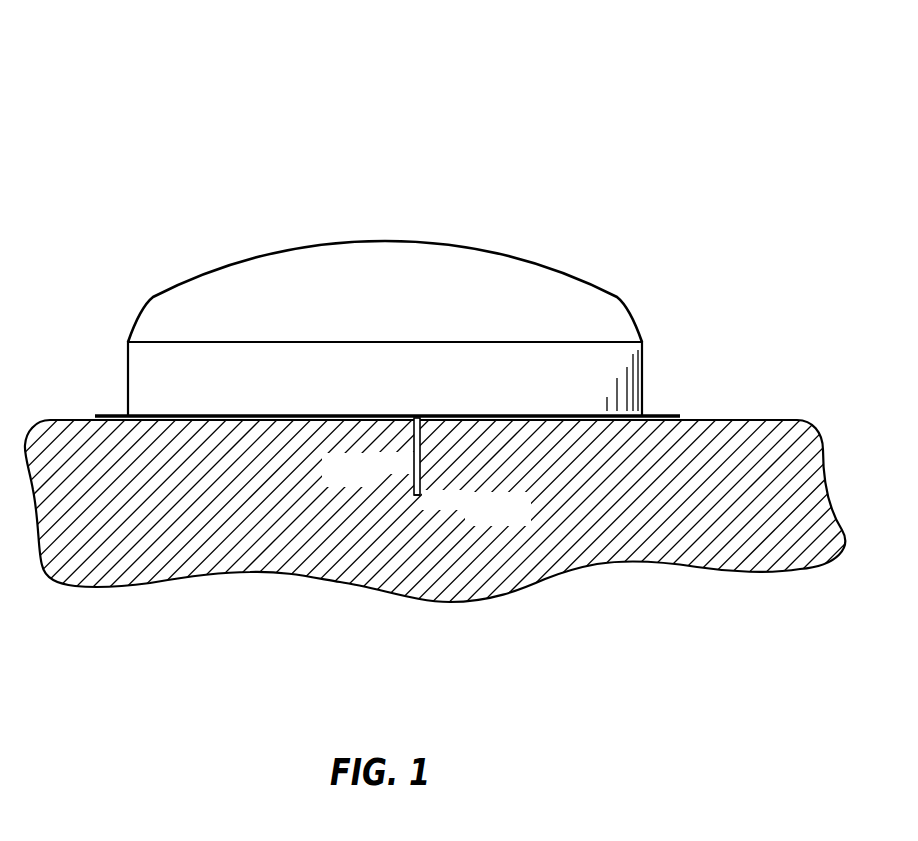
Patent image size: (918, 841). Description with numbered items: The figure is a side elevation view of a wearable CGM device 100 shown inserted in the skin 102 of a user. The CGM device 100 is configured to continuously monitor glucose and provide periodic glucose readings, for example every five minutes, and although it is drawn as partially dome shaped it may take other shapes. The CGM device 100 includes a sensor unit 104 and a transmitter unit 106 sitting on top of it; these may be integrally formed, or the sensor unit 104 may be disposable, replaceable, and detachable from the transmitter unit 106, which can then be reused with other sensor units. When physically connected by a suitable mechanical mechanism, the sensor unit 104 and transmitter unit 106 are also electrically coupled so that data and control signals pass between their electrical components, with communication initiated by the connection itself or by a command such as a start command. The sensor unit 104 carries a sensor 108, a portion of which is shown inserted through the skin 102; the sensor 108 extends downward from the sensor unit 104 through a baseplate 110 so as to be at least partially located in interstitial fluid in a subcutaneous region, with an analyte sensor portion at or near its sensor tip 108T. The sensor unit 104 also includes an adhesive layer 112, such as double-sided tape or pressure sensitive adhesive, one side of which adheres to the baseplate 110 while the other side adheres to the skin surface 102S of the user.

The wearable CGM device 100 is at (212, 78).
The skin 102 is at (185, 578).
The skin surface 102S is at (743, 418).
The sensor unit 104 is at (126, 379).
The transmitter unit 106 is at (537, 265).
The sensor 108 is at (413, 457).
The sensor tip 108T is at (420, 495).
The baseplate 110 is at (462, 415).
The adhesive layer 112 is at (655, 412).